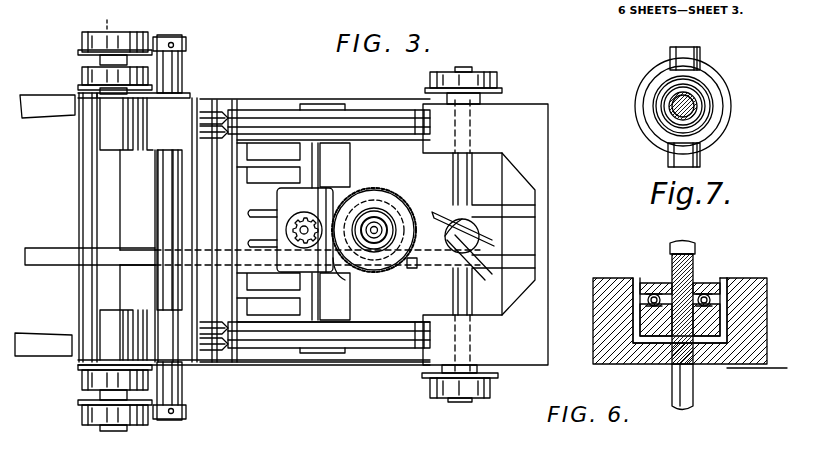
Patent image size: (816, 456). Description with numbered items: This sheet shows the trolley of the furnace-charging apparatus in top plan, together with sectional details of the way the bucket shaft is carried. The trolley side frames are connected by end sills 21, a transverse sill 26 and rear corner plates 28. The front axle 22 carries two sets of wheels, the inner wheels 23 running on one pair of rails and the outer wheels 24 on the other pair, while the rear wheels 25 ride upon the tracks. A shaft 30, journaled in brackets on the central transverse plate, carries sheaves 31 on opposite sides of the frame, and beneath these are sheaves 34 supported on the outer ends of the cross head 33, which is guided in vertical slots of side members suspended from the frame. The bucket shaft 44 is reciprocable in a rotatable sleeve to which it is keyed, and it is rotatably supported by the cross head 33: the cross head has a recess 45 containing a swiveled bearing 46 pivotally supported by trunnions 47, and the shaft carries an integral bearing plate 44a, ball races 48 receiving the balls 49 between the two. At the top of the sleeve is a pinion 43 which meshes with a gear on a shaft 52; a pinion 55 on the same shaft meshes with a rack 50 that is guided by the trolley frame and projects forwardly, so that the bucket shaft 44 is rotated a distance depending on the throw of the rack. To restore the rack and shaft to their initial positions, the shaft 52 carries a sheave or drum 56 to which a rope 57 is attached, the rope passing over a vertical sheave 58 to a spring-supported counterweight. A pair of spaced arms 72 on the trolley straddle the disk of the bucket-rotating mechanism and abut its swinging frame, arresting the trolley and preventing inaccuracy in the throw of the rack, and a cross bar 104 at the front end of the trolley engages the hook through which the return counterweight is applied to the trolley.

In FIG. 3, the end sill 21 is at (80, 190).
In FIG. 3, the front axle 22 is at (110, 33).
In FIG. 3, the inner wheel 23 is at (82, 78).
In FIG. 3, the outer wheel 24 is at (153, 33).
In FIG. 3, the rear wheel 25 is at (427, 388).
In FIG. 3, the transverse sill 26 is at (215, 231).
In FIG. 3, the rear corner plate 28 is at (485, 236).
In FIG. 3, the shaft 30 is at (330, 224).
In FIG. 3, the sheave 31 is at (372, 122).
In FIG. 6, the cross head 33 is at (765, 333).
In FIG. 3, the sheave 34 is at (224, 112).
In FIG. 3, the pinion 43 is at (286, 214).
In FIG. 3, the bucket shaft 44 is at (300, 230).
In FIG. 7, the bucket shaft 44 is at (697, 97).
In FIG. 6, the bucket shaft 44 is at (688, 404).
In FIG. 6, the bearing plate 44a is at (723, 280).
In FIG. 6, the recess 45 is at (717, 343).
In FIG. 7, the swiveled bearing 46 is at (713, 113).
In FIG. 6, the swiveled bearing 46 is at (652, 336).
In FIG. 7, the trunnion 47 is at (678, 55).
In FIG. 6, the trunnion 47 is at (710, 280).
In FIG. 6, the ball race 48 is at (660, 292).
In FIG. 6, the ball 49 is at (650, 295).
In FIG. 3, the rack 50 is at (66, 262).
In FIG. 3, the shaft 52 is at (378, 230).
In FIG. 3, the pinion 55 is at (366, 268).
In FIG. 3, the sheave or drum 56 is at (378, 194).
In FIG. 3, the rope 57 is at (416, 212).
In FIG. 3, the vertical sheave 58 is at (450, 245).
In FIG. 3, the arm 72 is at (70, 118).
In FIG. 3, the cross bar 104 is at (160, 232).